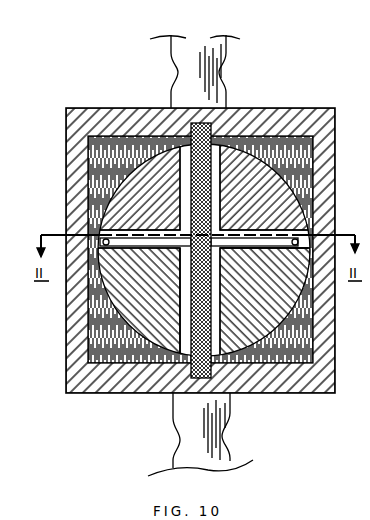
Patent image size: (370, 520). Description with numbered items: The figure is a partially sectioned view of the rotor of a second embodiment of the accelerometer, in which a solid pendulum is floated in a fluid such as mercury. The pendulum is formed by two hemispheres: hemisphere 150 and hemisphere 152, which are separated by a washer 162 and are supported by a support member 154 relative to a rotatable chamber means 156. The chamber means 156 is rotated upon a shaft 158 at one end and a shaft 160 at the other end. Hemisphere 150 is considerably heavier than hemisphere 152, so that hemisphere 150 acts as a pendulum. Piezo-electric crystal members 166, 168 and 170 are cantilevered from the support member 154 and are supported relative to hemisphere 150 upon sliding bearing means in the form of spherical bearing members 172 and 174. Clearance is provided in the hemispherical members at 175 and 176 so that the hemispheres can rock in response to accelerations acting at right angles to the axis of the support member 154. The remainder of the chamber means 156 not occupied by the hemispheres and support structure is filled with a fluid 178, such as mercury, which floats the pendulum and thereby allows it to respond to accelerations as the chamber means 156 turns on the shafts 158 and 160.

The hemisphere 150 is at (156, 310).
The hemisphere 152 is at (258, 187).
The support member 154 is at (203, 120).
The rotatable chamber means 156 is at (327, 107).
The shaft 158 is at (167, 58).
The shaft 160 is at (218, 441).
The washer 162 is at (298, 242).
The piezo-electric crystal member 166 is at (174, 248).
The piezo-electric crystal member 168 is at (254, 228).
The piezo-electric crystal member 170 is at (130, 233).
The spherical bearing member 172 is at (117, 258).
The spherical bearing member 174 is at (248, 268).
The clearance 175 is at (173, 193).
The clearance 176 is at (212, 303).
The fluid 178 is at (90, 328).